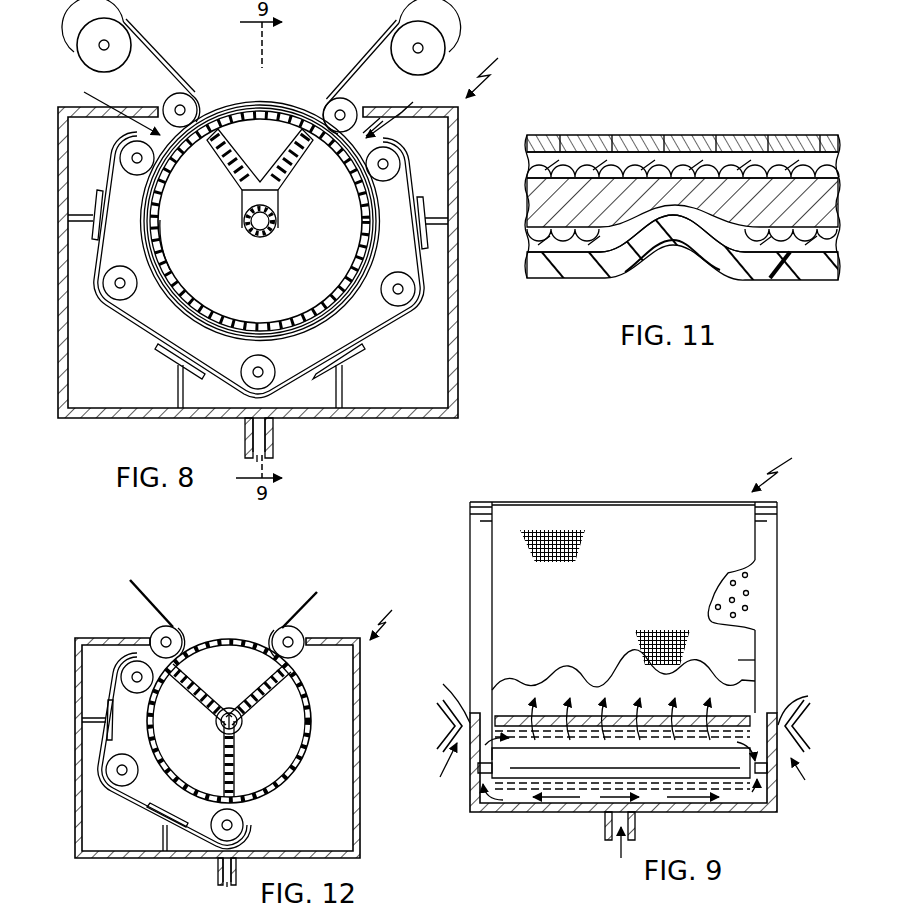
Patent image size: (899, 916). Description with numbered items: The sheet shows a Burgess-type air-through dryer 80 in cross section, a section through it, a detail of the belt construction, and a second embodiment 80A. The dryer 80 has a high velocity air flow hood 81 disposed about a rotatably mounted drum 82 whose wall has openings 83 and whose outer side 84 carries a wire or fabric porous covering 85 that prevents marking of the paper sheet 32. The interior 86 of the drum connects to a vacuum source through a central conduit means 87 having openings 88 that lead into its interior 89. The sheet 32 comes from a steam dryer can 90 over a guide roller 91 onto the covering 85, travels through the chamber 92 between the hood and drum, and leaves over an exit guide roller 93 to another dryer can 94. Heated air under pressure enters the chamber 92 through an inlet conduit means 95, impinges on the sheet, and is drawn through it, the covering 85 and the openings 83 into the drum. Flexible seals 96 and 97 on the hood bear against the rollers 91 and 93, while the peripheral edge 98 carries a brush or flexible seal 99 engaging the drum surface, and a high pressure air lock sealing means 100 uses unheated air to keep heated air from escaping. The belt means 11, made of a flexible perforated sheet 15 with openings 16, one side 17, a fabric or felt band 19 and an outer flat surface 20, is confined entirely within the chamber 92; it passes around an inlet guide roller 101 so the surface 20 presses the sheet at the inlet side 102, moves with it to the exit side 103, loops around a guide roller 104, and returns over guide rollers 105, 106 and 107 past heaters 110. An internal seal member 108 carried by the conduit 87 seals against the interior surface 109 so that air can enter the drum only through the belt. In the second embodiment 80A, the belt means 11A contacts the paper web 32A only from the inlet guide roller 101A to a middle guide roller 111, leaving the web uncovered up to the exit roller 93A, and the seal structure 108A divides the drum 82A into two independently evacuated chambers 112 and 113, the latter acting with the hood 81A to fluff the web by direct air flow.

In FIG. 8, the belt means 11 is at (133, 326).
In FIG. 11, the belt means 11 is at (840, 262).
In FIG. 9, the belt means 11 is at (733, 797).
In FIG. 12, the belt means 11A is at (141, 798).
In FIG. 11, the flexible perforated sheet 15 is at (775, 280).
In FIG. 11, the openings 16 is at (680, 255).
In FIG. 11, the side of flexible sheet 17 is at (585, 280).
In FIG. 11, the fabric or felt band 19 is at (530, 238).
In FIG. 8, the outer flat surface 20 is at (165, 213).
In FIG. 11, the outer flat surface 20 is at (540, 215).
In FIG. 8, the paper sheet 32 is at (145, 41).
In FIG. 11, the paper sheet 32 is at (575, 170).
In FIG. 9, the paper sheet 32 is at (614, 713).
In FIG. 12, the paper web 32A is at (172, 612).
In FIG. 8, the air-through dryer 80 is at (499, 71).
In FIG. 9, the air-through dryer 80 is at (788, 467).
In FIG. 12, the air-through dryer 80A is at (394, 615).
In FIG. 8, the high velocity air flow hood 81 is at (459, 350).
In FIG. 9, the high velocity air flow hood 81 is at (776, 803).
In FIG. 12, the hood 81A is at (75, 818).
In FIG. 8, the drum 82 is at (271, 105).
In FIG. 11, the drum 82 is at (718, 150).
In FIG. 9, the drum 82 is at (482, 534).
In FIG. 12, the drum 82A is at (307, 757).
In FIG. 8, the openings 83 is at (279, 108).
In FIG. 9, the openings 83 is at (745, 593).
In FIG. 8, the outer side of drum 84 is at (262, 103).
In FIG. 9, the outer side of drum 84 is at (742, 614).
In FIG. 8, the porous covering 85 is at (243, 104).
In FIG. 11, the porous covering 85 is at (768, 156).
In FIG. 9, the porous covering 85 is at (742, 647).
In FIG. 8, the interior of the drum 86 is at (364, 238).
In FIG. 9, the interior of the drum 86 is at (760, 682).
In FIG. 8, the central conduit means 87 is at (279, 203).
In FIG. 8, the openings 88 is at (277, 224).
In FIG. 8, the interior of the conduit means 89 is at (250, 228).
In FIG. 8, the steam dryer can 90 is at (77, 47).
In FIG. 8, the guide roller 91 is at (186, 93).
In FIG. 8, the chamber 92 is at (445, 370).
In FIG. 8, the exit guide roller 93 is at (362, 76).
In FIG. 12, the exit guide roller 93A is at (302, 633).
In FIG. 8, the dryer can 94 is at (426, 33).
In FIG. 8, the inlet conduit means 95 is at (275, 440).
In FIG. 9, the inlet conduit means 95 is at (640, 822).
In FIG. 8, the flexible seal 96 is at (167, 100).
In FIG. 8, the flexible seal 97 is at (388, 122).
In FIG. 9, the peripheral edge of the dryer hood 98 is at (443, 694).
In FIG. 9, the brush or flexible seal 99 is at (807, 703).
In FIG. 9, the high pressure air lock sealing means 100 is at (446, 725).
In FIG. 8, the inlet guide roller 101 is at (119, 158).
In FIG. 12, the inlet guide roller 101A is at (120, 677).
In FIG. 8, the inlet side 102 is at (101, 108).
In FIG. 8, the exit side 103 is at (409, 114).
In FIG. 8, the guide roller 104 is at (392, 156).
In FIG. 8, the guide roller 105 is at (418, 291).
In FIG. 8, the guide roller 106 is at (247, 385).
In FIG. 9, the guide roller 106 is at (557, 775).
In FIG. 8, the guide roller 107 is at (118, 300).
In FIG. 8, the internal seal member 108 is at (183, 168).
In FIG. 12, the seal structure 108A is at (170, 675).
In FIG. 8, the interior surface of the drum 109 is at (168, 253).
In FIG. 8, the heaters 110 is at (96, 203).
In FIG. 12, the middle guide roller 111 is at (246, 826).
In FIG. 12, the chamber 112 is at (176, 761).
In FIG. 12, the chamber 113 is at (280, 737).